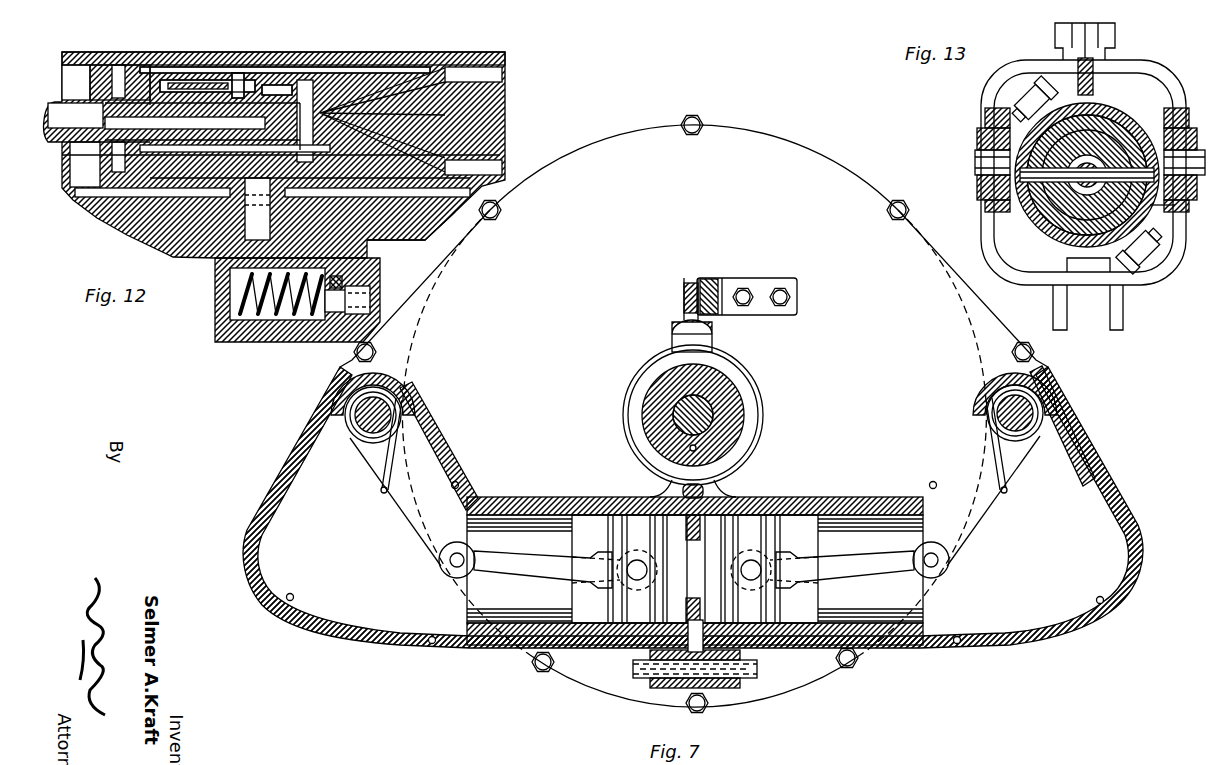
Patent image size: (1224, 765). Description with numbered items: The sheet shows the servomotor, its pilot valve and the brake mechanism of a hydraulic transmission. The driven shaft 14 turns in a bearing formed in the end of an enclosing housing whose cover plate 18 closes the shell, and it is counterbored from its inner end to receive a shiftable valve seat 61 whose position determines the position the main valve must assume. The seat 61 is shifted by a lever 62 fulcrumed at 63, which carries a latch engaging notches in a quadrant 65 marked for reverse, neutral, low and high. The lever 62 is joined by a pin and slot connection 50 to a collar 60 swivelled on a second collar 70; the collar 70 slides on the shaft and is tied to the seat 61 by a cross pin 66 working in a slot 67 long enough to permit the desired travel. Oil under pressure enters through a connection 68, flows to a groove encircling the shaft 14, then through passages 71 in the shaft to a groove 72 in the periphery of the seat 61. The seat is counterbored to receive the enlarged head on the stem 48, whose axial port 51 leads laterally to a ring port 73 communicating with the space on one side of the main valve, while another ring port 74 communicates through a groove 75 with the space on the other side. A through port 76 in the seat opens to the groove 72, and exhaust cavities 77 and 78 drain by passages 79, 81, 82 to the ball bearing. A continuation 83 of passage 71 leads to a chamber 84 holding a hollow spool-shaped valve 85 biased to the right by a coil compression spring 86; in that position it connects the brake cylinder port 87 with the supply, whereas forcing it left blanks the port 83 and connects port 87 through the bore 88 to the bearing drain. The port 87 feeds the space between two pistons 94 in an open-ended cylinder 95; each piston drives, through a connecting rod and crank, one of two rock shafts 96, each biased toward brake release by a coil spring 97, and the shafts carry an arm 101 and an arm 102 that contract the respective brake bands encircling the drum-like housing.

In FIG. 12, the driven shaft 14 is at (458, 66).
In FIG. 13, the driven shaft 14 is at (1178, 208).
In FIG. 7, the driven shaft 14 is at (718, 380).
In FIG. 7, the cover plate 18 is at (755, 150).
In FIG. 12, the stem 48 is at (70, 147).
In FIG. 13, the pin and slot connection 50 is at (988, 165).
In FIG. 12, the axial port 51 is at (112, 122).
In FIG. 13, the collar 60 is at (1038, 222).
In FIG. 12, the valve seat 61 is at (348, 80).
In FIG. 13, the valve seat 61 is at (1105, 140).
In FIG. 13, the lever 62 is at (1176, 92).
In FIG. 7, the lever 62 is at (650, 688).
In FIG. 7, the fulcrum 63 is at (745, 663).
In FIG. 13, the quadrant 65 is at (1094, 64).
In FIG. 7, the quadrant 65 is at (712, 280).
In FIG. 13, the cross pin 66 is at (1010, 208).
In FIG. 13, the slot 67 is at (1150, 165).
In FIG. 7, the connection 68 is at (683, 300).
In FIG. 13, the collar 70 is at (1098, 112).
In FIG. 12, the passages 71 is at (258, 72).
In FIG. 12, the groove 72 is at (170, 82).
In FIG. 12, the ring port 73 is at (278, 86).
In FIG. 12, the ring port 74 is at (222, 90).
In FIG. 12, the groove 75 is at (150, 72).
In FIG. 12, the through port 76 is at (240, 75).
In FIG. 12, the exhaust cavity 77 is at (200, 88).
In FIG. 12, the exhaust cavity 78 is at (305, 85).
In FIG. 12, the passage 79 is at (180, 142).
In FIG. 12, the passage 81 is at (398, 72).
In FIG. 12, the passage 82 is at (95, 200).
In FIG. 12, the continuation of passage 83 is at (330, 252).
In FIG. 12, the chamber 84 is at (298, 335).
In FIG. 12, the spool-shaped valve 85 is at (258, 342).
In FIG. 12, the coil compression spring 86 is at (228, 312).
In FIG. 12, the brake cylinder port 87 is at (333, 326).
In FIG. 7, the brake cylinder port 87 is at (683, 494).
In FIG. 12, the bore 88 is at (360, 298).
In FIG. 7, the pistons 94 is at (596, 515).
In FIG. 7, the cylinder 95 is at (520, 497).
In FIG. 7, the rock shafts 96 is at (385, 410).
In FIG. 7, the coil spring 97 is at (380, 482).
In FIG. 7, the arm 101 is at (425, 428).
In FIG. 7, the arm 102 is at (957, 428).